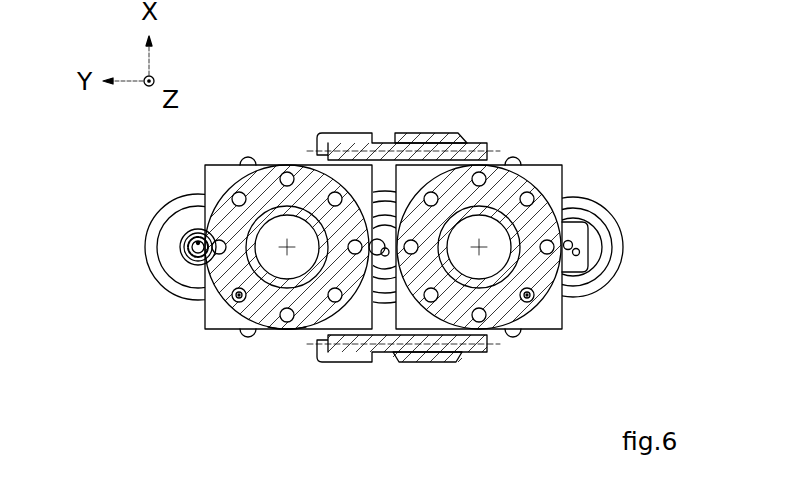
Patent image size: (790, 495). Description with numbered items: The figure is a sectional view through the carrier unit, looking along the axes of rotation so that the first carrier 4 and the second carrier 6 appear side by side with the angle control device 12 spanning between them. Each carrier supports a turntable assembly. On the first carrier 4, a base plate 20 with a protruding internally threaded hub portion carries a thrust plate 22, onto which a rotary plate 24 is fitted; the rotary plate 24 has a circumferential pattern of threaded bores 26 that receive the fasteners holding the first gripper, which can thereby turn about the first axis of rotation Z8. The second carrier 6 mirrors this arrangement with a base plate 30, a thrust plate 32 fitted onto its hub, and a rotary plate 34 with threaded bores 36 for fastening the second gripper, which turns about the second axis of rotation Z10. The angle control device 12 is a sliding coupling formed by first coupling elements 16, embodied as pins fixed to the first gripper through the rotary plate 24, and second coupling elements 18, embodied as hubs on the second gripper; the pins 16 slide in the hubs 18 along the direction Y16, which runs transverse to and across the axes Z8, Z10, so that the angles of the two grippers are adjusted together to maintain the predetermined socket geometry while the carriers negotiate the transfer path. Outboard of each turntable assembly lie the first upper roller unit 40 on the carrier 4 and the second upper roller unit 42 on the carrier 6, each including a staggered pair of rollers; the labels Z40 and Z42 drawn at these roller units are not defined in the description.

The first carrier 4 is at (183, 342).
The second carrier 6 is at (587, 344).
The angle control device 12 is at (456, 108).
The first coupling element 16 is at (378, 142).
The second coupling element 18 is at (417, 138).
The base plate 20 is at (277, 231).
The thrust plate 22 is at (277, 285).
The rotary plate 24 is at (292, 330).
The threaded bores 26 is at (236, 298).
The base plate 30 is at (490, 233).
The thrust plate 32 is at (497, 210).
The rotary plate 34 is at (514, 166).
The threaded bores 36 is at (533, 298).
The first upper roller unit 40 is at (148, 226).
The second upper roller unit 42 is at (620, 228).
The first axis of rotation Z8 is at (194, 262).
The second axis of rotation Z10 is at (580, 254).
The axis of cover 40 Z40 is at (182, 227).
The axis of cover 42 Z42 is at (623, 197).
The sliding direction Y16 is at (313, 150).